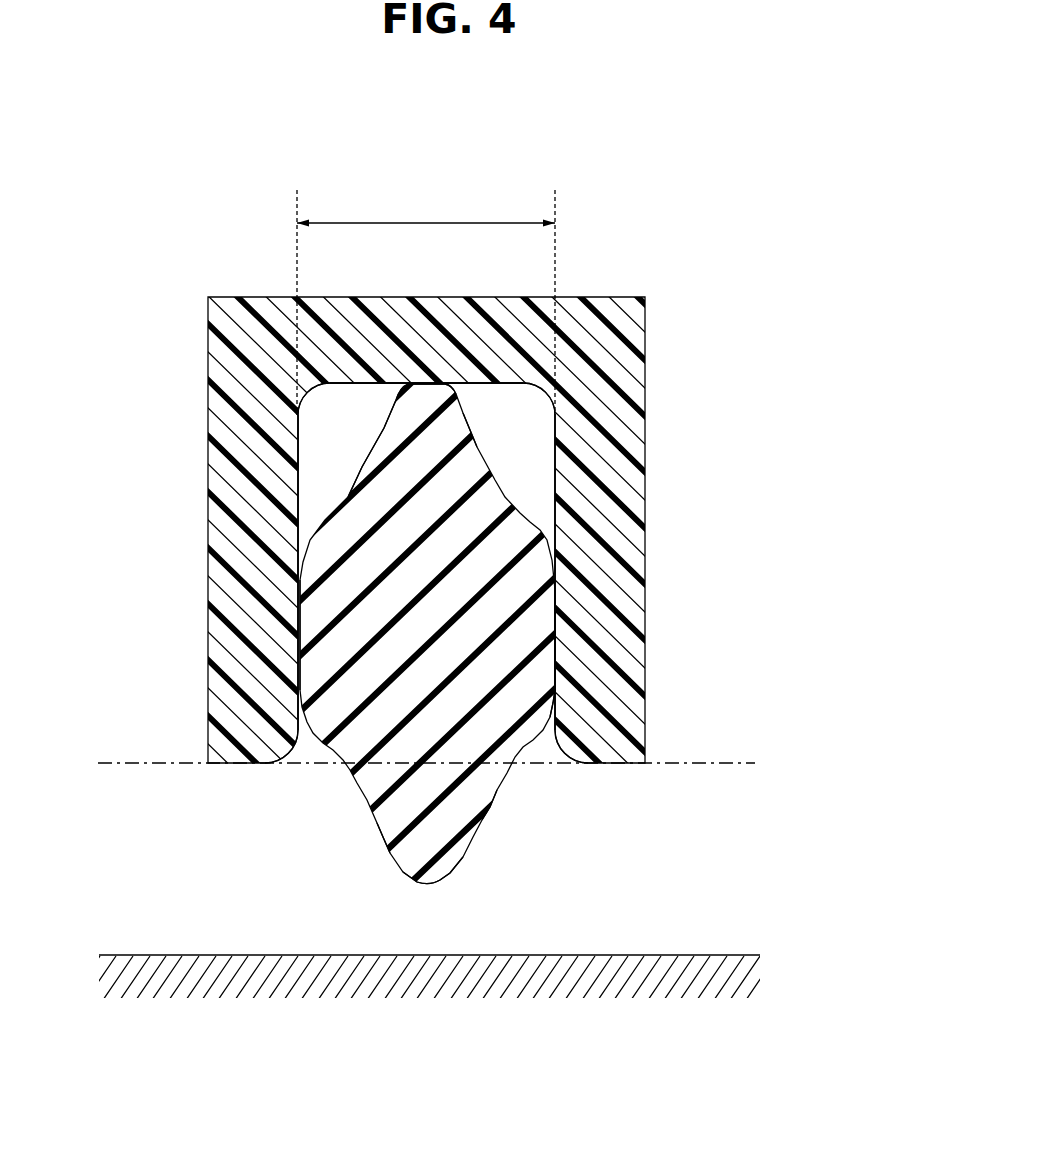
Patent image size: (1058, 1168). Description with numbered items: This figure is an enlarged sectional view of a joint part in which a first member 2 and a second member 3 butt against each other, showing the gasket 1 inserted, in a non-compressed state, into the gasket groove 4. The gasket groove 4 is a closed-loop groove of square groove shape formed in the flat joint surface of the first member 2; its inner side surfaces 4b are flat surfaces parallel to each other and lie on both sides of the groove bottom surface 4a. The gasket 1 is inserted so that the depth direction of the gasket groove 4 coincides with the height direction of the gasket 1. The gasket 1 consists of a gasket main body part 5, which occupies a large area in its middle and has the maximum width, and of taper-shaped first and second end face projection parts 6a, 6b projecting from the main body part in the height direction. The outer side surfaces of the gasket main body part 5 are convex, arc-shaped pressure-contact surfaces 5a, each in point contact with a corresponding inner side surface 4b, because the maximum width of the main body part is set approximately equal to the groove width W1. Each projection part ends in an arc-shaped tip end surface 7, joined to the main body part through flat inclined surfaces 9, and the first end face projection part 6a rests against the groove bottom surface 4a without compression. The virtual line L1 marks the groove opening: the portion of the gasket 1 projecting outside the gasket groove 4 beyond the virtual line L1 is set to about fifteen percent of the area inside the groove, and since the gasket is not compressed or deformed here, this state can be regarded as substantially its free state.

The gasket 1 is at (500, 449).
The first member 2 is at (655, 375).
The second member 3 is at (136, 938).
The gasket groove 4 is at (426, 573).
The groove bottom surface 4a is at (500, 391).
The inner side surfaces 4b is at (298, 463).
The gasket main body part 5 is at (558, 662).
The pressure-contact surfaces 5a is at (300, 570).
The first end face projection part 6a is at (398, 426).
The second end face projection part 6b is at (450, 820).
The tip end surfaces 7 is at (423, 381).
The inclined surfaces 9 is at (472, 433).
The virtual line L1 is at (150, 760).
The groove width W1 is at (426, 302).